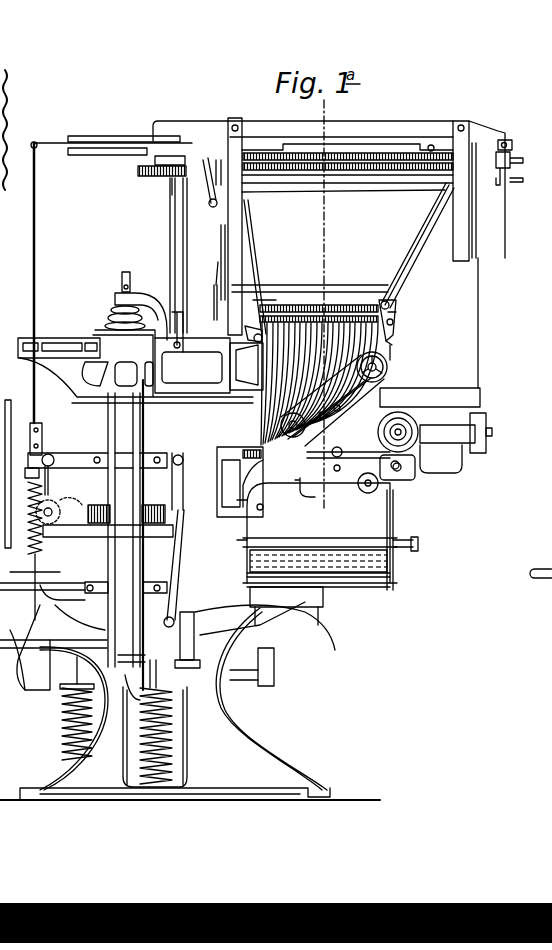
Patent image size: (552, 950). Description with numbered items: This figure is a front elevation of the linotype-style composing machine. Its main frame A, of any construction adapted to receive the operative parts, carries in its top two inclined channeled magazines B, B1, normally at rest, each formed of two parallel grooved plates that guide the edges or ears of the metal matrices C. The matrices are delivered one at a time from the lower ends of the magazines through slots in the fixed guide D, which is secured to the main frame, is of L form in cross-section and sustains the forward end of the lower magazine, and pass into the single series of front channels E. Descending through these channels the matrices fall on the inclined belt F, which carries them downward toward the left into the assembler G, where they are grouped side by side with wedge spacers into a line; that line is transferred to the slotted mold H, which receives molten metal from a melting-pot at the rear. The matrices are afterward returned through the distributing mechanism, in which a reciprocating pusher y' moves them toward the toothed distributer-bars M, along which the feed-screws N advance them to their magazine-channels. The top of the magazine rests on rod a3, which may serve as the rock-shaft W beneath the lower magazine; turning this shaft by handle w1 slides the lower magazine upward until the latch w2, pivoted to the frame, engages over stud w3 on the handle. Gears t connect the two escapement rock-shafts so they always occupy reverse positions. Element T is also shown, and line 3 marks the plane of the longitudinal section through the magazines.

The main frame A is at (406, 128).
The distributer-bar M is at (340, 152).
The feed-screw N is at (388, 170).
The rod a3 is at (410, 283).
The pusher y' is at (209, 142).
The rock-shaft W is at (245, 257).
The latch w2 is at (219, 244).
The stud w3 is at (216, 272).
The handle w1 is at (213, 292).
The gear t is at (383, 300).
The magazine B is at (388, 300).
The magazine B1 is at (396, 303).
The tappet T is at (393, 312).
The guide D is at (395, 323).
The front channels E is at (392, 340).
The inclined belt F is at (385, 376).
The section line 3 is at (330, 303).
The matrix C is at (94, 510).
The slotted mold H is at (167, 540).
The assembler G is at (258, 470).